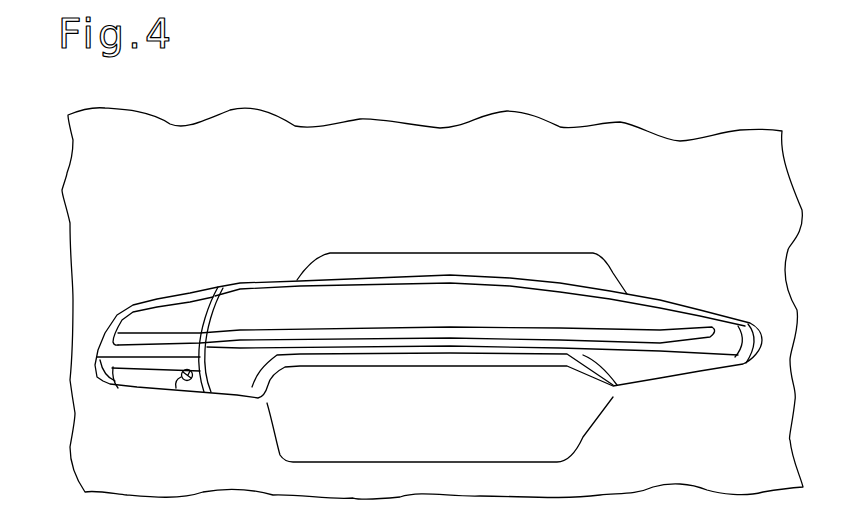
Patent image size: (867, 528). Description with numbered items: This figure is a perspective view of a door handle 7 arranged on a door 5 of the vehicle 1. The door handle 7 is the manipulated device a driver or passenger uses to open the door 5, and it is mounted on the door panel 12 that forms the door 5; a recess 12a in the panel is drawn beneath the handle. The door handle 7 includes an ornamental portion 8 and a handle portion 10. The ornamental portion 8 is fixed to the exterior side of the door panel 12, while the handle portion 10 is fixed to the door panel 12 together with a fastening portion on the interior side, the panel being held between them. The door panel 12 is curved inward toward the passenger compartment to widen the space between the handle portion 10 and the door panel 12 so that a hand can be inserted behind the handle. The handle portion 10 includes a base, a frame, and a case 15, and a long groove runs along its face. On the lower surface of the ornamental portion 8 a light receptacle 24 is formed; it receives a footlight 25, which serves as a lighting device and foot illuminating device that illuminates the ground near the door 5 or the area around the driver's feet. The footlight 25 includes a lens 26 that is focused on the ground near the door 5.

The vehicle 1 is at (691, 122).
The door 5 is at (560, 127).
The door handle 7 is at (473, 273).
The ornamental portion 8 is at (147, 317).
The handle portion 10 is at (373, 297).
The door panel 12 is at (460, 176).
The recess 12a is at (580, 430).
The case 15 is at (663, 318).
The light receptacle 24 is at (186, 368).
The footlight 25 is at (197, 387).
The lens 26 is at (181, 380).